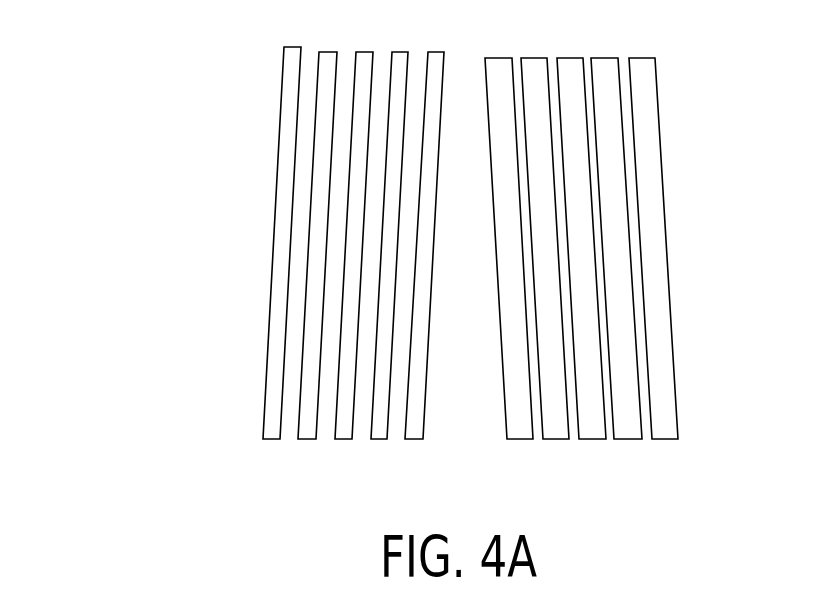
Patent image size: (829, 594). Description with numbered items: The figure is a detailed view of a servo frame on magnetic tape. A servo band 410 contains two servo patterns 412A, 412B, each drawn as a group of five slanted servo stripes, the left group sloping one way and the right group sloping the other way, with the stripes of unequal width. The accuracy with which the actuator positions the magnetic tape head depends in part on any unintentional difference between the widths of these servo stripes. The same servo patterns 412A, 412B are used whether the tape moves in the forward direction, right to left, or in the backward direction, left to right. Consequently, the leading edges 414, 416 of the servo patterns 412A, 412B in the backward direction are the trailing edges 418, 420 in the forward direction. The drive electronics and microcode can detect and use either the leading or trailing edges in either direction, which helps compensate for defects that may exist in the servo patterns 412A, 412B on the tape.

The servo band 410 is at (226, 214).
The servo pattern 412A is at (402, 452).
The servo pattern 412B is at (522, 455).
The leading edge 414 is at (280, 135).
The leading edge 416 is at (485, 137).
The trailing edge 418 is at (442, 90).
The trailing edge 420 is at (660, 135).